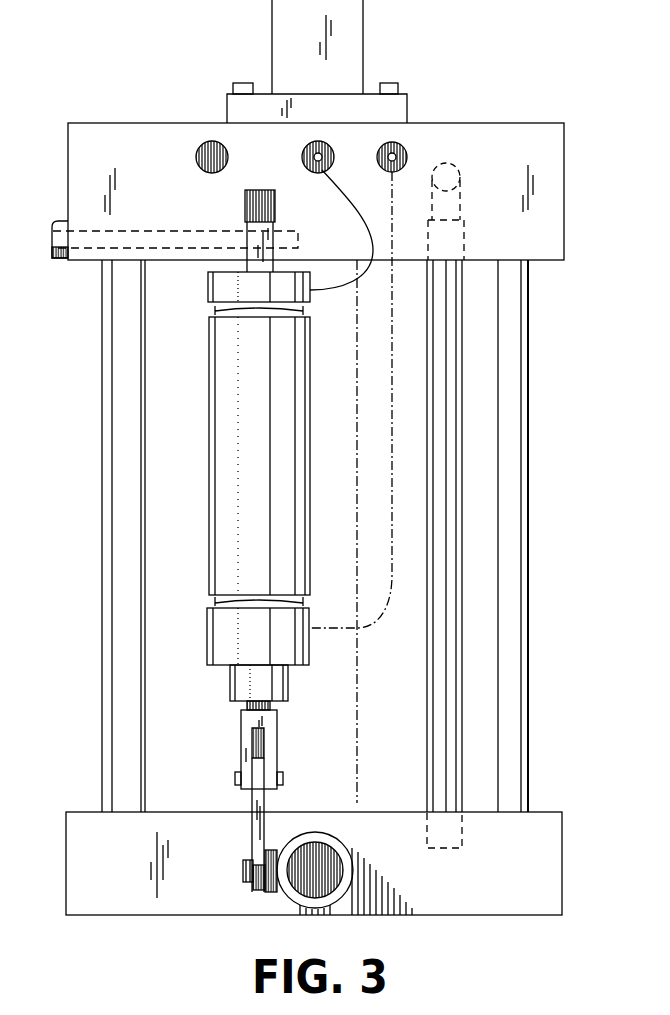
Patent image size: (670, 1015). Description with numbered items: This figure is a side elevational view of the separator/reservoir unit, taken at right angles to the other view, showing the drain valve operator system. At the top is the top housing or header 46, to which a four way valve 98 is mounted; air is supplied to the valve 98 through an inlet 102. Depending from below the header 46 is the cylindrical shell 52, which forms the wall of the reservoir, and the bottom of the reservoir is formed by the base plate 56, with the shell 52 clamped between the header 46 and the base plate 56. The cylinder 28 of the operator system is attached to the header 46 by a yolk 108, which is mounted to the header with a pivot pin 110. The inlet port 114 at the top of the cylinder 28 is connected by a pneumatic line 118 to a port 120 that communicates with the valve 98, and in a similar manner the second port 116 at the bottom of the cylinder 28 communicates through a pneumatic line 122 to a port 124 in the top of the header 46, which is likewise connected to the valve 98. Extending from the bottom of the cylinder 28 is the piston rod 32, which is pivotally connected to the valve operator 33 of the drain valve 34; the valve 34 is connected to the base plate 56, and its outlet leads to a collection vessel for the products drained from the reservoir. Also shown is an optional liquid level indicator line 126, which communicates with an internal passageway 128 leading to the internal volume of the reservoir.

The four way valve 98 is at (363, 30).
The inlet 102 is at (209, 141).
The port 120 is at (308, 147).
The port 124 is at (402, 146).
The internal passageway 128 is at (461, 205).
The top housing 46 is at (547, 123).
The yolk 108 is at (272, 237).
The pneumatic line 118 is at (372, 245).
The pivot pin 110 is at (58, 260).
The inlet port 114 is at (310, 292).
The cylinder 28 is at (209, 358).
The pneumatic line 122 is at (390, 376).
The liquid level indicator line 126 is at (463, 382).
The cylindrical shell 52 is at (529, 405).
The second port 116 is at (309, 630).
The piston rod 32 is at (277, 727).
The valve operator 33 is at (252, 836).
The drain valve 34 is at (347, 848).
The base plate 56 is at (548, 812).